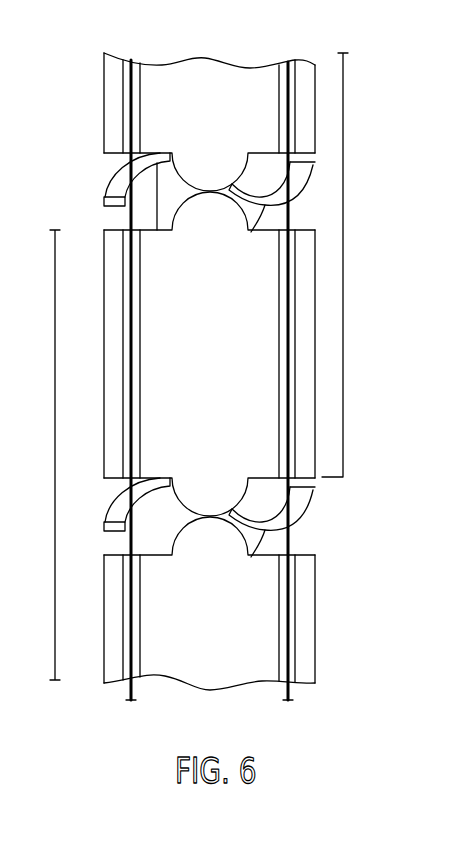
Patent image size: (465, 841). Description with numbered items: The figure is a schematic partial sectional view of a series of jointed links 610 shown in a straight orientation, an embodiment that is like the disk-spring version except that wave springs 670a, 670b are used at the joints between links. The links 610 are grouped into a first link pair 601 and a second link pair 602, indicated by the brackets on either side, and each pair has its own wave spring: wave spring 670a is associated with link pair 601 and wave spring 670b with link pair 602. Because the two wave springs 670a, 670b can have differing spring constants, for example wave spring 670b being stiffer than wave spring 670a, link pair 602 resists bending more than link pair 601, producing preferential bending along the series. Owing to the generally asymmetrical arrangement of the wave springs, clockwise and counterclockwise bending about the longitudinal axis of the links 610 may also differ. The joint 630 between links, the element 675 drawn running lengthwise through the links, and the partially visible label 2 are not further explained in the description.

The links 610 is at (197, 57).
The wires 675 is at (104, 76).
The hook 630 is at (155, 192).
The wave spring 670a is at (251, 232).
The wave spring 670b is at (251, 557).
The link pair 601 is at (345, 260).
The link pair 602 is at (55, 446).
The partial numeral 2 is at (4, 388).